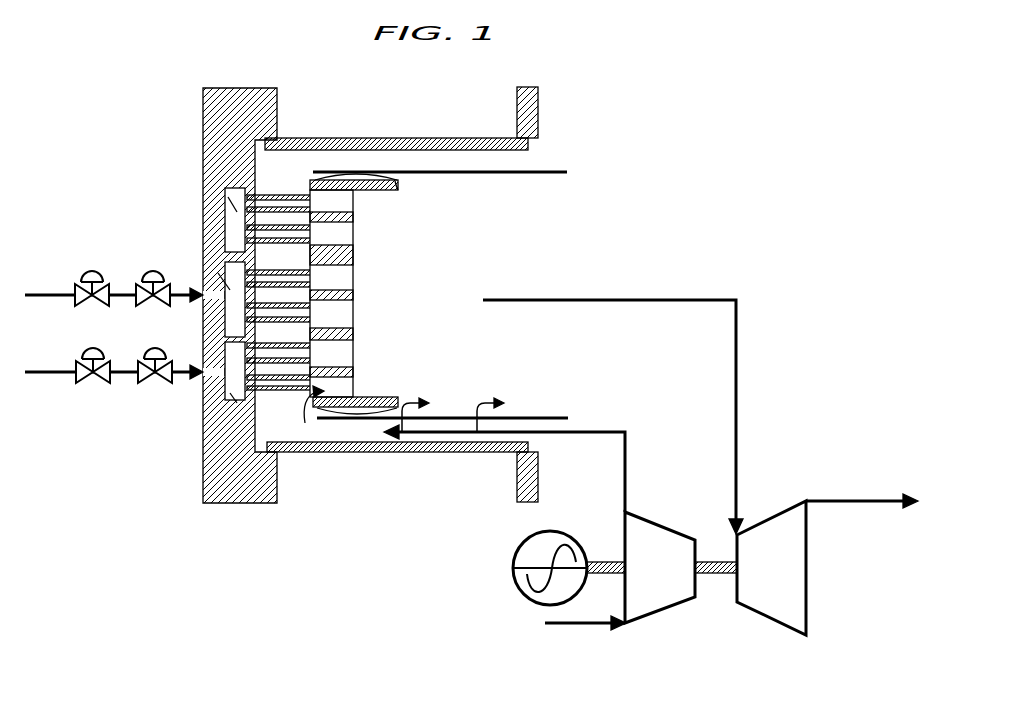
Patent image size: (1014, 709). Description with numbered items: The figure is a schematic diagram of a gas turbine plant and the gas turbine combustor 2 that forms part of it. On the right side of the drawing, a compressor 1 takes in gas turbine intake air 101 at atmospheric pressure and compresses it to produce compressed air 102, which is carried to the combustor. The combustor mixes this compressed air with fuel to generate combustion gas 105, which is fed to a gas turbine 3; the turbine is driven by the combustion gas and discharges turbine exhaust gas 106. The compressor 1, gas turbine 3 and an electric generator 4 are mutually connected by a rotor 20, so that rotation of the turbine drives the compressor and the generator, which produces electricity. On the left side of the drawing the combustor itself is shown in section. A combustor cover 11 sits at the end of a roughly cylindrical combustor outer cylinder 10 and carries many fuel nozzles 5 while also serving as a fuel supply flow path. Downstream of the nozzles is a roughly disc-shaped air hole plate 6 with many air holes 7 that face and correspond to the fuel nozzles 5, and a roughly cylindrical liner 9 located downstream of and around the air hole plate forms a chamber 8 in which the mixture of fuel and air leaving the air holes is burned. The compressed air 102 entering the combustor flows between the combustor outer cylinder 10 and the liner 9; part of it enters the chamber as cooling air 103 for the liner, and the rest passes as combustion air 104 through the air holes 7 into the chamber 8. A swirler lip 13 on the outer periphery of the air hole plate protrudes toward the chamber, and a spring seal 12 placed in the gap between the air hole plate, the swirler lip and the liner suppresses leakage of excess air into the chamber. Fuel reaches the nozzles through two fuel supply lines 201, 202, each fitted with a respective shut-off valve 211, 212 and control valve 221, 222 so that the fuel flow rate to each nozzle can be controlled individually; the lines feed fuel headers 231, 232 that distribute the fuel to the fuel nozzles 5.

The compressor 1 is at (667, 585).
The gas turbine combustor 2 is at (345, 118).
The gas turbine 3 is at (781, 583).
The generator 4 is at (516, 585).
The fuel nozzle 5 is at (275, 193).
The air hole plate 6 is at (355, 258).
The air hole 7 is at (355, 232).
The chamber 8 is at (463, 293).
The liner 9 is at (490, 174).
The combustor outer cylinder 10 is at (450, 138).
The combustor cover 11 is at (207, 108).
The spring seal 12 is at (385, 177).
The swirler lip 13 is at (385, 185).
The rotor 20 is at (718, 575).
The gas turbine intake air 101 is at (573, 626).
The compressed air 102 is at (600, 432).
The cooling air 103 is at (480, 405).
The combustion air 104 is at (308, 409).
The combustion gas 105 is at (672, 298).
The turbine exhaust gas 106 is at (862, 500).
The F1 fuel supply line 201 is at (53, 290).
The F2 fuel supply line 202 is at (53, 367).
The F1 fuel shut-off valve 211 is at (90, 265).
The F2 fuel shut-off valve 212 is at (98, 380).
The F1 fuel control valve 221 is at (150, 265).
The F2 fuel control valve 222 is at (162, 380).
The F1 fuel header 231 is at (218, 273).
The F2 fuel header 232 is at (228, 197).